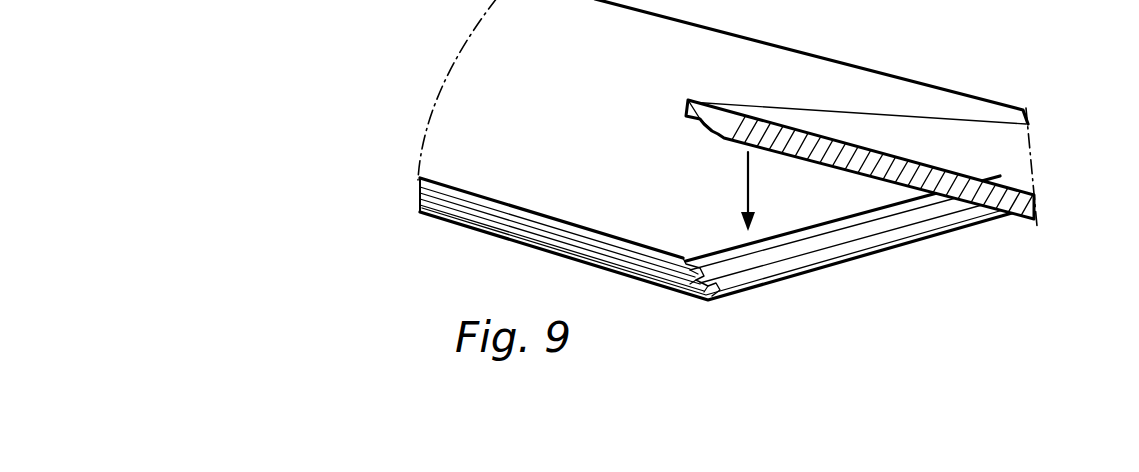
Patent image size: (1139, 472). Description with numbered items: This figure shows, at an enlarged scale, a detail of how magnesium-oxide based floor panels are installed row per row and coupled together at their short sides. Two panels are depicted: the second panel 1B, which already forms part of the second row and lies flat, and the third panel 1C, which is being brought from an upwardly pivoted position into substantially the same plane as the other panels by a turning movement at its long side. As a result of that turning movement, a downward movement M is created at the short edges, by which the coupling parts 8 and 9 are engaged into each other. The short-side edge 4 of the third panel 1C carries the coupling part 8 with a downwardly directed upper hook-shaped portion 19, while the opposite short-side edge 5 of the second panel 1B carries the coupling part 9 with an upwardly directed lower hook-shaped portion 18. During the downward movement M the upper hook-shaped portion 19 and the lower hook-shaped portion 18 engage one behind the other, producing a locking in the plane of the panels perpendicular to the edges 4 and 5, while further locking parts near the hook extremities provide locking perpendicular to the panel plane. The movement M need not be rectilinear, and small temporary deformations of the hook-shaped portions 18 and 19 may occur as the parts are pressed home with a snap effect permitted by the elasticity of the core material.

The second panel 1B is at (470, 134).
The third panel 1C is at (1000, 158).
The edge 4 is at (874, 100).
The upper hook-shaped portion 19 is at (706, 88).
The coupling part 8 is at (678, 125).
The coupling part 9 is at (918, 205).
The downward movement M is at (748, 186).
The lower hook-shaped portion 18 is at (848, 272).
The edge 5 is at (716, 251).